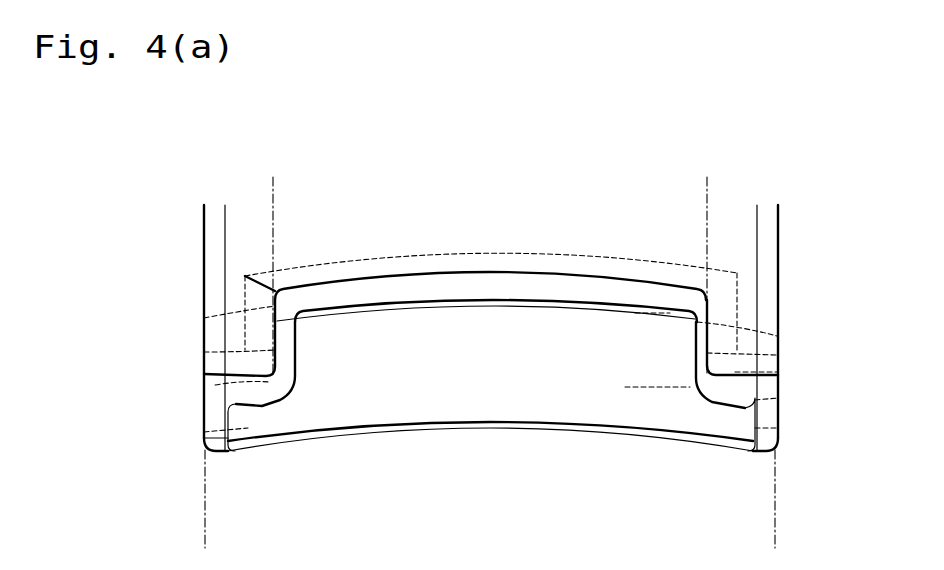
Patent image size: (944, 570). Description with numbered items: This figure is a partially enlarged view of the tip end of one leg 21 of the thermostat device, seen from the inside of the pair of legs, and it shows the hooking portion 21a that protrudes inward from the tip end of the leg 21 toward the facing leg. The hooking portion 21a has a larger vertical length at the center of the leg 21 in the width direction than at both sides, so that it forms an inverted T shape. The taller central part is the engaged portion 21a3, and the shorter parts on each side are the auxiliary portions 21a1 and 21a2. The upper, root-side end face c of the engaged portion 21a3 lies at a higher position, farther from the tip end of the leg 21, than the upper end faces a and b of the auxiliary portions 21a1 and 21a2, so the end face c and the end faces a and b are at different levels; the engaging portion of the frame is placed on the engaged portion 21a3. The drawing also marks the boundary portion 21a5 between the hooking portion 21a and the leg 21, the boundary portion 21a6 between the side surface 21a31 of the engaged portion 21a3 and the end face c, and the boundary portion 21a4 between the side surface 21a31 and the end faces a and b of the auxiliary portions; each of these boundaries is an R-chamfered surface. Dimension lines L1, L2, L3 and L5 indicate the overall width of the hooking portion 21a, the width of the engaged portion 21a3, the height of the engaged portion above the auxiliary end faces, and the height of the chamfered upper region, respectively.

The leg 21 is at (243, 215).
The hooking portion 21a is at (474, 354).
The auxiliary portion 21a1 is at (733, 427).
The auxiliary portion 21a2 is at (207, 435).
The engaged portion 21a3 is at (453, 352).
The boundary portion between the engaged portion and the end faces of the auxiliary 21a4 is at (222, 380).
The boundary portion between the hooking portion and the leg 21a5 is at (440, 262).
The boundary portion between the side surface and the end face of the engaged portio 21a6 is at (703, 300).
The side surface 21a31 is at (275, 322).
The end face a is at (740, 380).
The end face b is at (215, 390).
The end face c is at (510, 254).
The overall length L1 is at (775, 528).
The raised portion length L2 is at (707, 194).
The height L3 is at (664, 313).
The height L5 is at (598, 278).